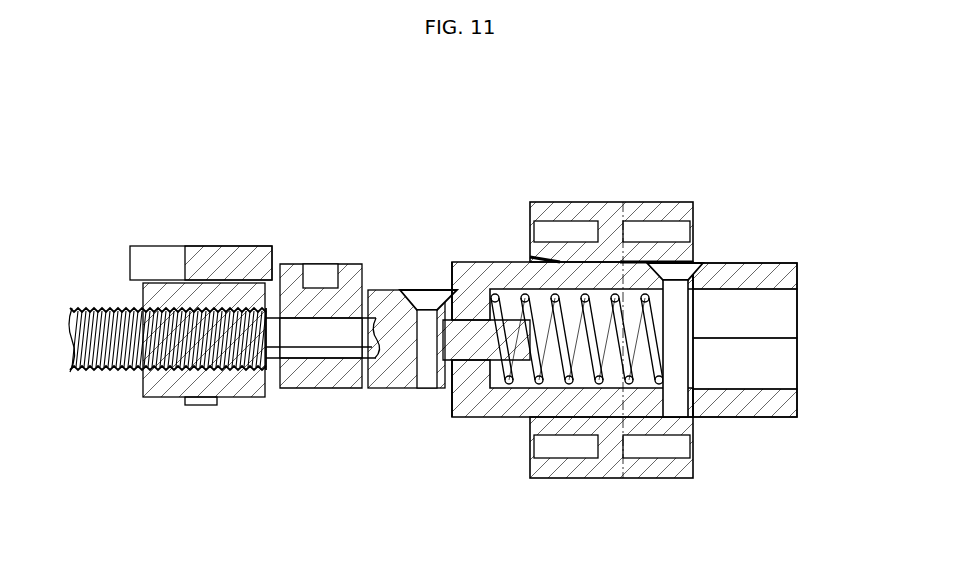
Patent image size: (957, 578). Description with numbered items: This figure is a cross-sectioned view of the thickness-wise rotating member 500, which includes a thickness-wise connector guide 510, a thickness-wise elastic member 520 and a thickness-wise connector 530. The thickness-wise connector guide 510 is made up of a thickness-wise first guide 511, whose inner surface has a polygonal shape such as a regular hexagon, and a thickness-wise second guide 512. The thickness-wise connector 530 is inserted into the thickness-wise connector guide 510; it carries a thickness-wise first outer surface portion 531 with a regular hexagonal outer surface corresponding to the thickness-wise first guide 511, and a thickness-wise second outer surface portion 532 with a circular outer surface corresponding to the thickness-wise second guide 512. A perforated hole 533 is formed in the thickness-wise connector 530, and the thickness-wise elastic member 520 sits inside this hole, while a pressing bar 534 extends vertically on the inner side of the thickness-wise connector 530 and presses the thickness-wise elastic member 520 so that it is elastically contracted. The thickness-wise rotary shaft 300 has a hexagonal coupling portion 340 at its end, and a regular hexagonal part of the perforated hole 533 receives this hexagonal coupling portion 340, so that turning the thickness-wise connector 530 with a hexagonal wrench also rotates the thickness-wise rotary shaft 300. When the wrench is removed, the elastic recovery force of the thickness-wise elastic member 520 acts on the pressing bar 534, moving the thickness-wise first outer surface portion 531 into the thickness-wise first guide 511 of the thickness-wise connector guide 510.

The thickness-wise rotary shaft 300 is at (108, 308).
The hexagonal coupling portion 340 is at (391, 388).
The thickness-wise rotating member 500 is at (715, 125).
The thickness-wise connector guide 510 is at (625, 150).
The thickness-wise first guide 511 is at (567, 202).
The thickness-wise second guide 512 is at (662, 202).
The thickness-wise elastic member 520 is at (600, 370).
The thickness-wise connector 530 is at (768, 218).
The thickness-wise first outer surface portion 531 is at (487, 275).
The thickness-wise second outer surface portion 532 is at (748, 270).
The perforated hole 533 is at (780, 318).
The pressing bar 534 is at (680, 368).